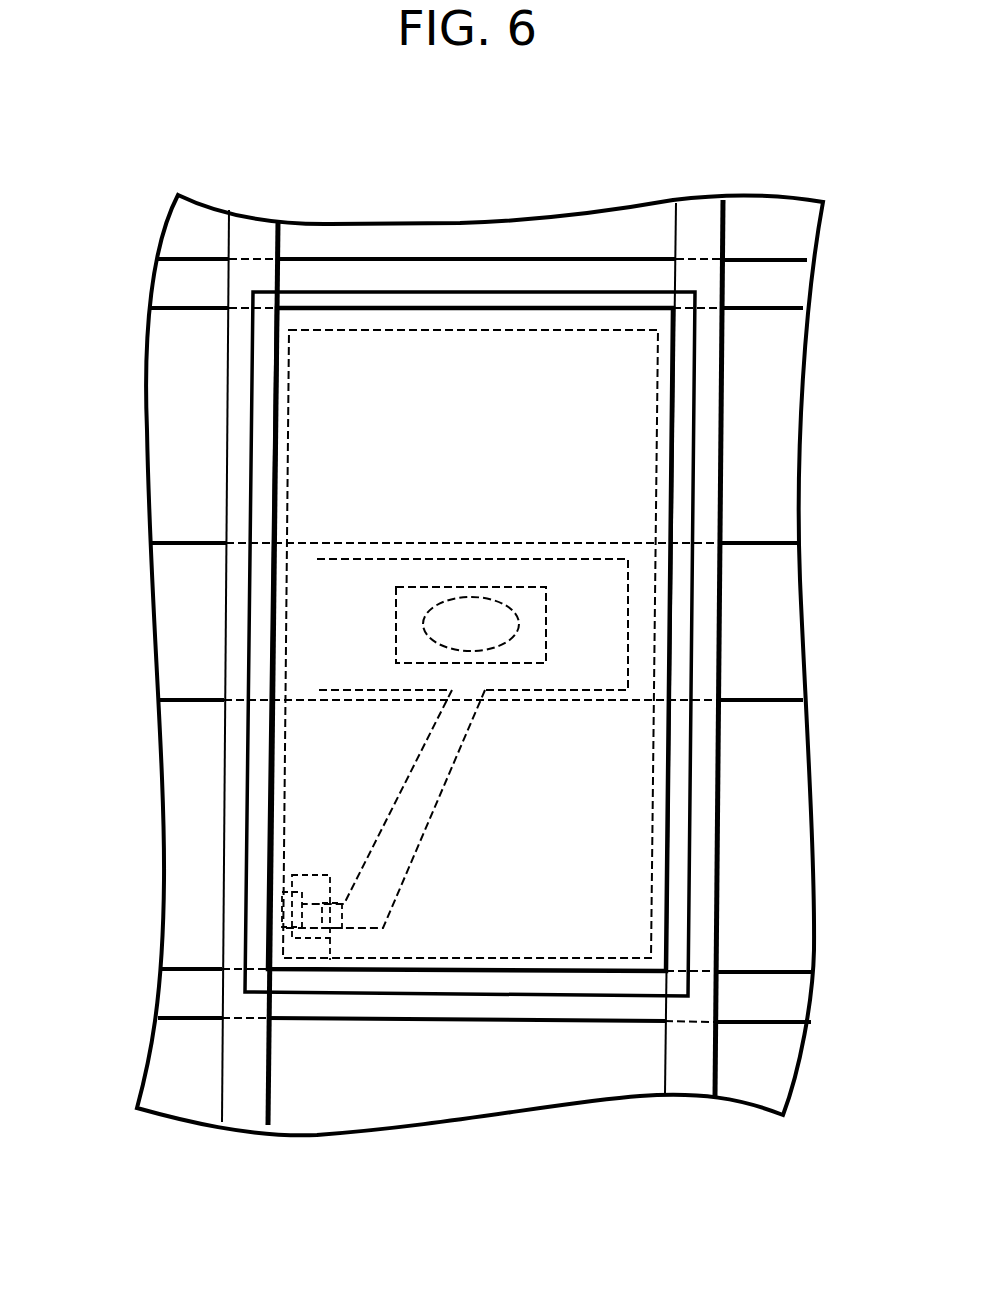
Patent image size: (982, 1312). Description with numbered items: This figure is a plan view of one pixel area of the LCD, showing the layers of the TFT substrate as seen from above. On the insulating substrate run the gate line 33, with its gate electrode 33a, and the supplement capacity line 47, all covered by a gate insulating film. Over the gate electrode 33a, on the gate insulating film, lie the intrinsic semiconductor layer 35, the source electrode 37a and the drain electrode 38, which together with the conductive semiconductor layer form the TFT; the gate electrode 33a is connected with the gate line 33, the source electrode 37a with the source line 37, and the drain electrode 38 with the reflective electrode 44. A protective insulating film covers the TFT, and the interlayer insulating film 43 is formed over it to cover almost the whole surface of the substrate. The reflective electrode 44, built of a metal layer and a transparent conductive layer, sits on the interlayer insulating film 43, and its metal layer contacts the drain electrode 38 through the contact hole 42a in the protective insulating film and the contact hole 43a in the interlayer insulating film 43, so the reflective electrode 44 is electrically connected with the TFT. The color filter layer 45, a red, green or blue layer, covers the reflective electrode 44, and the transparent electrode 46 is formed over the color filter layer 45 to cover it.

The gate line 33 is at (448, 1002).
The gate electrode 33a is at (317, 963).
The intrinsic semiconductor layer 35 is at (293, 937).
The source line 37 is at (290, 905).
The source electrode 37a is at (232, 940).
The drain electrode 38 is at (385, 828).
The contact hole 42a is at (413, 575).
The interlayer insulating film 43 is at (248, 740).
The contact hole 43a is at (470, 612).
The reflective electrode 44 is at (683, 435).
The color filter layer 45 is at (612, 785).
The transparent electrode 46 is at (274, 429).
The supplement capacity line 47 is at (765, 617).